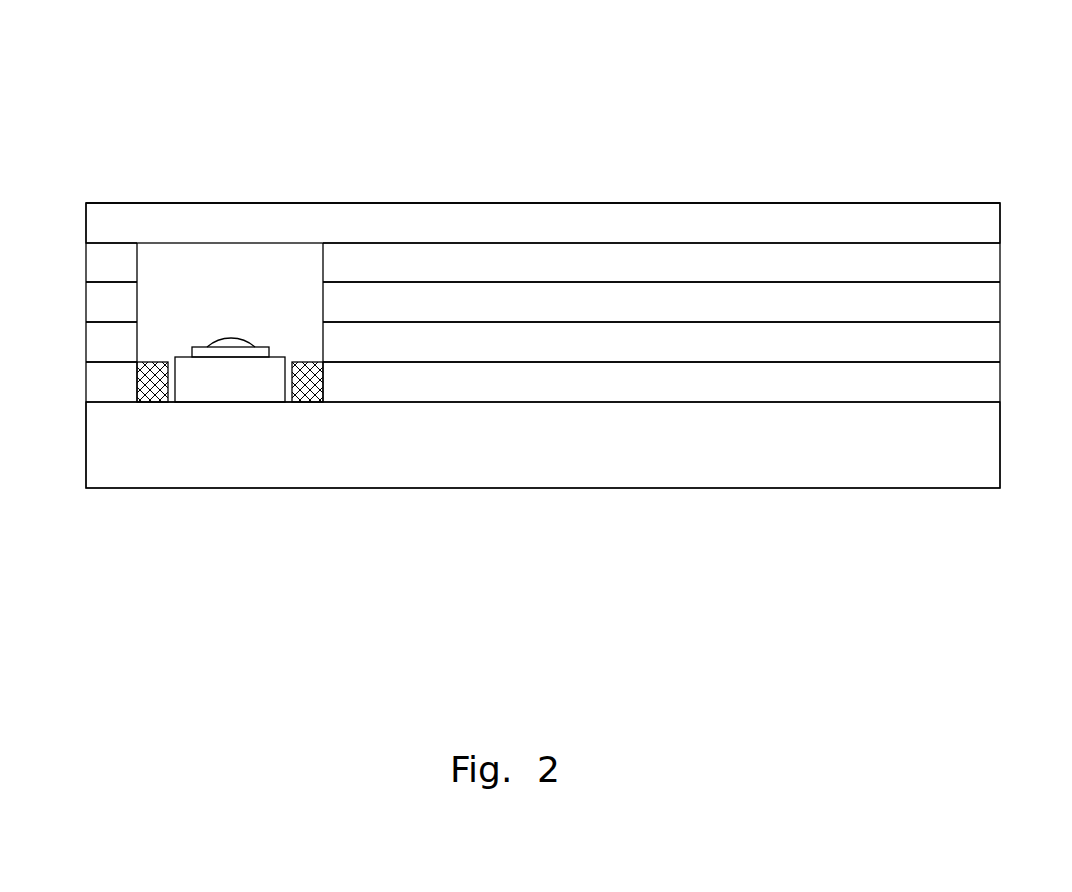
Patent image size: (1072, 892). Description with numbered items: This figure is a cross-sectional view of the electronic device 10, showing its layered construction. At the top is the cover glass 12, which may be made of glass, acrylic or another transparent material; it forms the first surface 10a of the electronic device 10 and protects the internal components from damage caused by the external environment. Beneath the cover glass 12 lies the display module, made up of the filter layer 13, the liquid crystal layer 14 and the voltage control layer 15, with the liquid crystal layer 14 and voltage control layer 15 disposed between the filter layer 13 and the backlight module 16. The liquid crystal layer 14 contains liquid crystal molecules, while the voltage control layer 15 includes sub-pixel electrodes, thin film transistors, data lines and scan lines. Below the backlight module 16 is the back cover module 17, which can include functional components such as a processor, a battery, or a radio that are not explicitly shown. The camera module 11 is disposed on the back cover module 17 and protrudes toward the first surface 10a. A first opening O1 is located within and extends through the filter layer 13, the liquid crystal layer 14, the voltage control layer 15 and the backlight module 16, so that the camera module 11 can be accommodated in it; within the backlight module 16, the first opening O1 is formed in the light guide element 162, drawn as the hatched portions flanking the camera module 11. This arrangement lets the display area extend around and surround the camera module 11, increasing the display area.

The electronic device 10 is at (46, 105).
The first surface 10a is at (600, 202).
The camera module 11 is at (221, 385).
The cover glass 12 is at (992, 223).
The filter layer 13 is at (992, 262).
The liquid crystal layer 14 is at (992, 301).
The voltage control layer 15 is at (992, 338).
The backlight module 16 is at (992, 383).
The back cover module 17 is at (992, 447).
The light guide element 162 is at (157, 382).
The first opening O1 is at (150, 378).